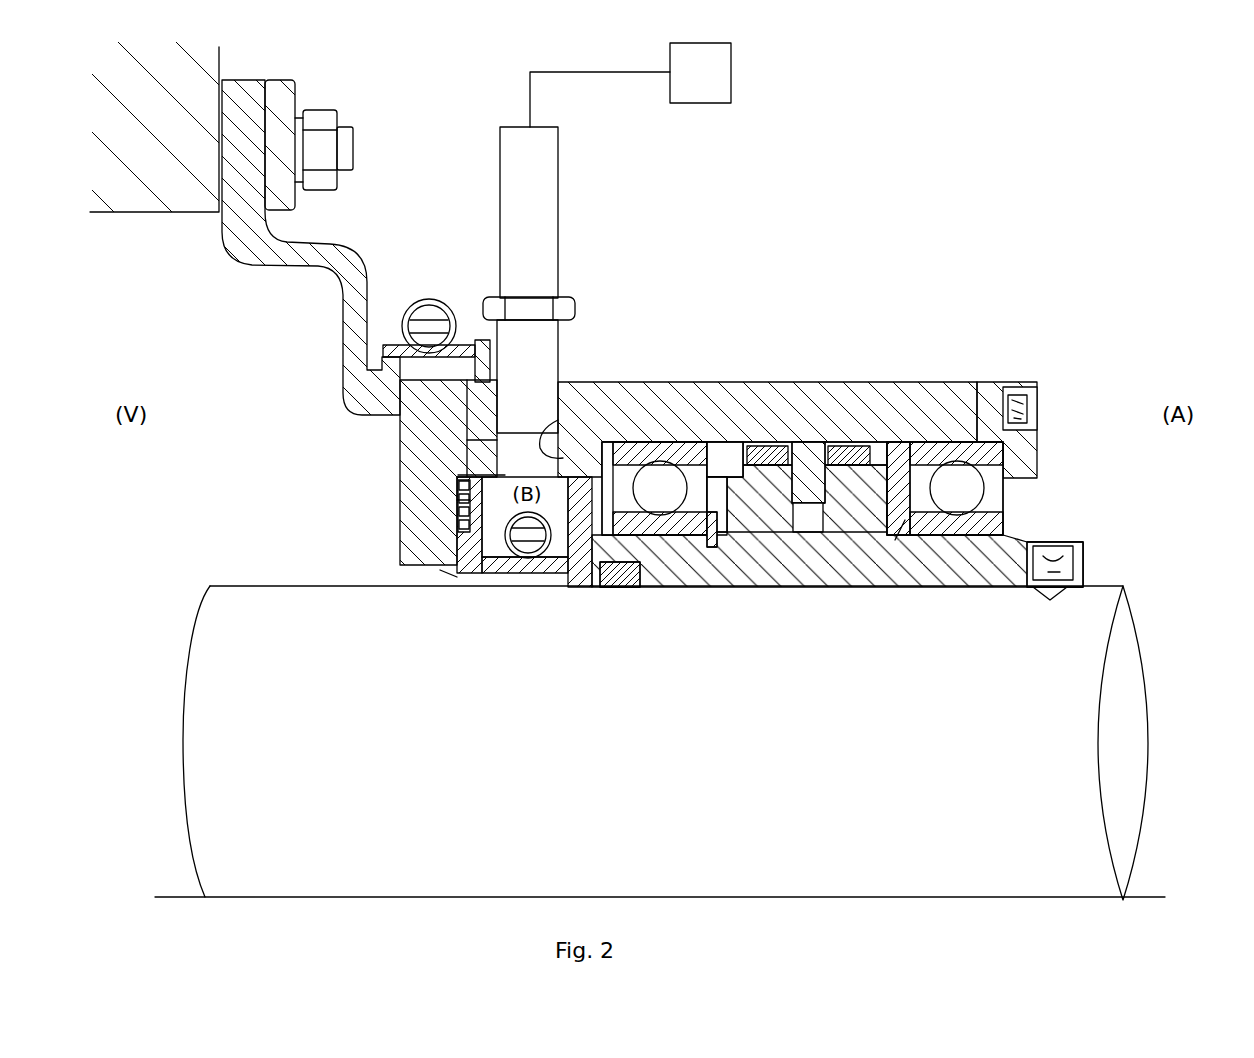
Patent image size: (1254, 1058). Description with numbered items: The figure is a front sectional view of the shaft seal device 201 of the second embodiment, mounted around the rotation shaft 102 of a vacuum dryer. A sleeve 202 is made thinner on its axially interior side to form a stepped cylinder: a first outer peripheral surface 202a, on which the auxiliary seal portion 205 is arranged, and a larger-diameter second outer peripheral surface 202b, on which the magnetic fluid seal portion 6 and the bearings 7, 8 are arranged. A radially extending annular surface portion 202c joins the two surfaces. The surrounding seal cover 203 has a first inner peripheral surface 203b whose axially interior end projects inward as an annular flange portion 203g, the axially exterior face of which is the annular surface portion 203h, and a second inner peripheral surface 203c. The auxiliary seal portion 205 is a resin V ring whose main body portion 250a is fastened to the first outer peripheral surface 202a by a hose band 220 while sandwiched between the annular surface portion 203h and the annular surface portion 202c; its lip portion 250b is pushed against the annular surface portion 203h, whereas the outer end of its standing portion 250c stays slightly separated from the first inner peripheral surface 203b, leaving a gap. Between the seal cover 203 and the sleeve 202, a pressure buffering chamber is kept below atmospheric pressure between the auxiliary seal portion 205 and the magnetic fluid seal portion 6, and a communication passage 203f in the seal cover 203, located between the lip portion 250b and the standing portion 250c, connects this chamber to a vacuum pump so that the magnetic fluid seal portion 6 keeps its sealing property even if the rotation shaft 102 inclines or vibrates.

The rotation shaft 102 is at (215, 700).
The shaft seal device 201 is at (1060, 318).
The sleeve 202 is at (1098, 560).
The first outer peripheral surface 202a is at (580, 590).
The second outer peripheral surface 202b is at (747, 523).
The annular surface portion 202c is at (585, 593).
The seal cover 203 is at (392, 457).
The first inner peripheral surface 203b is at (473, 440).
The second inner peripheral surface 203c is at (1010, 438).
The communication passage 203f is at (560, 390).
The flange portion 203g is at (457, 506).
The annular surface portion 203h is at (458, 590).
The auxiliary seal portion 205 is at (447, 580).
The hose band 220 is at (456, 544).
The main body portion 250a is at (527, 592).
The lip portion 250b is at (457, 484).
The standing portion 250c is at (552, 455).
The magnetic fluid seal portion 6 is at (908, 586).
The bearing 7 is at (684, 430).
The bearing 8 is at (932, 437).